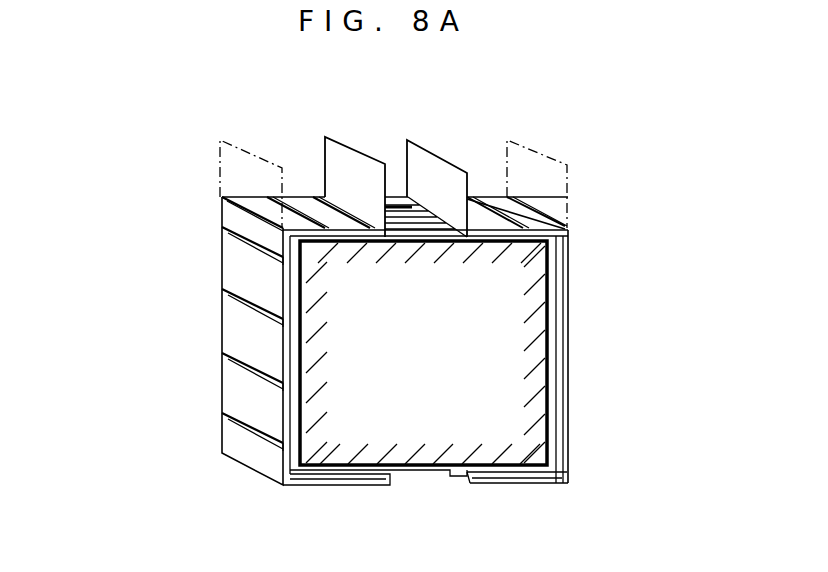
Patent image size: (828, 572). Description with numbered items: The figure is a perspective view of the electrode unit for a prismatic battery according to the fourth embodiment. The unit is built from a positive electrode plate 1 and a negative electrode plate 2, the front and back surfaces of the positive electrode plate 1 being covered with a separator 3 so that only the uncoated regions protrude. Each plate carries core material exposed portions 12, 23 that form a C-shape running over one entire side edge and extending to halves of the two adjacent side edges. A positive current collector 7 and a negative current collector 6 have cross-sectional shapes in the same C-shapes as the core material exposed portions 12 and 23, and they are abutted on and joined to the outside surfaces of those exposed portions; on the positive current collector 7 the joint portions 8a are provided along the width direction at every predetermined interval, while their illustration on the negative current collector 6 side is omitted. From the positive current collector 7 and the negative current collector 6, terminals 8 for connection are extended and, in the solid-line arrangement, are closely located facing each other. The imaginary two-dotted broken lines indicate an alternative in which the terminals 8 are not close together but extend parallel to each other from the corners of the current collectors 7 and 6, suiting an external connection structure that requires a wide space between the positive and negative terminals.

The positive electrode plate 1 is at (295, 475).
The negative electrode plate 2 is at (557, 380).
The separator 3 is at (297, 413).
The negative current collector 6 is at (485, 200).
The positive current collector 7 is at (230, 267).
The terminal 8 is at (348, 150).
The joint portion 8a is at (228, 368).
The core material exposed portion 12 is at (340, 475).
The core material exposed portion 23 is at (553, 305).